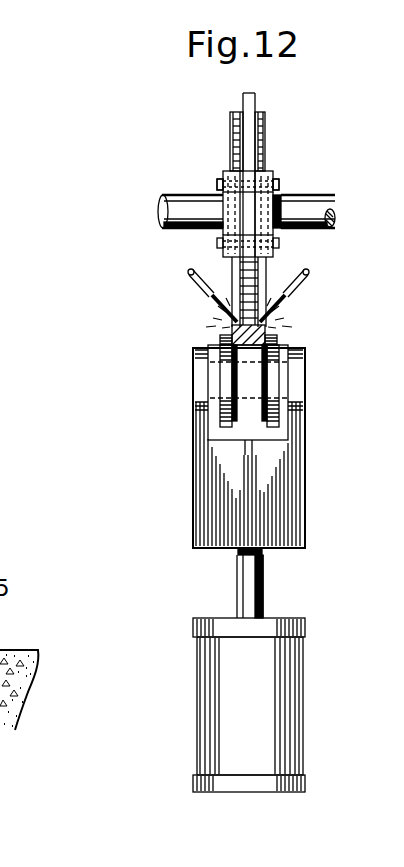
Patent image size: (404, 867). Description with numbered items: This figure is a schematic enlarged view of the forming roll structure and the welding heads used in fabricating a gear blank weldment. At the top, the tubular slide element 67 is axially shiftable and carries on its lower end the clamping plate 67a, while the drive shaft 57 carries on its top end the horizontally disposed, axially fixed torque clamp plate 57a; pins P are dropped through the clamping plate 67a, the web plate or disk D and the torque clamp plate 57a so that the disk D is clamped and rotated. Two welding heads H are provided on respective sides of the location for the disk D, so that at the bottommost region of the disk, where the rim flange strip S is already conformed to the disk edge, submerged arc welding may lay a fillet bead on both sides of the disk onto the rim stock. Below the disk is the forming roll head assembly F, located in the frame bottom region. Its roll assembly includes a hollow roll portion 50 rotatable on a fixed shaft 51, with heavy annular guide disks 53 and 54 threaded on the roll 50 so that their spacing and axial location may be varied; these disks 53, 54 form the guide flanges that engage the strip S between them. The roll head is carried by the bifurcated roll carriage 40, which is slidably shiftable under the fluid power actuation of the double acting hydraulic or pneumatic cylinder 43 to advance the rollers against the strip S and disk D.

The web plate or disk D is at (258, 97).
The strip of straight flat stock S is at (229, 124).
The pins P is at (217, 186).
The clamping plate 67a is at (222, 174).
The torque clamp plate 57a is at (276, 178).
The tubular slide element 67 is at (180, 195).
The drive shaft 57 is at (313, 194).
The welding head H is at (200, 276).
The annular guide disk 53 is at (232, 330).
The annular guide disk 54 is at (272, 328).
The shaft 51 is at (193, 355).
The hollow roll portion 50 is at (286, 350).
The forming roller means F is at (310, 416).
The roll carriage 40 is at (193, 482).
The cylinder 43 is at (198, 696).